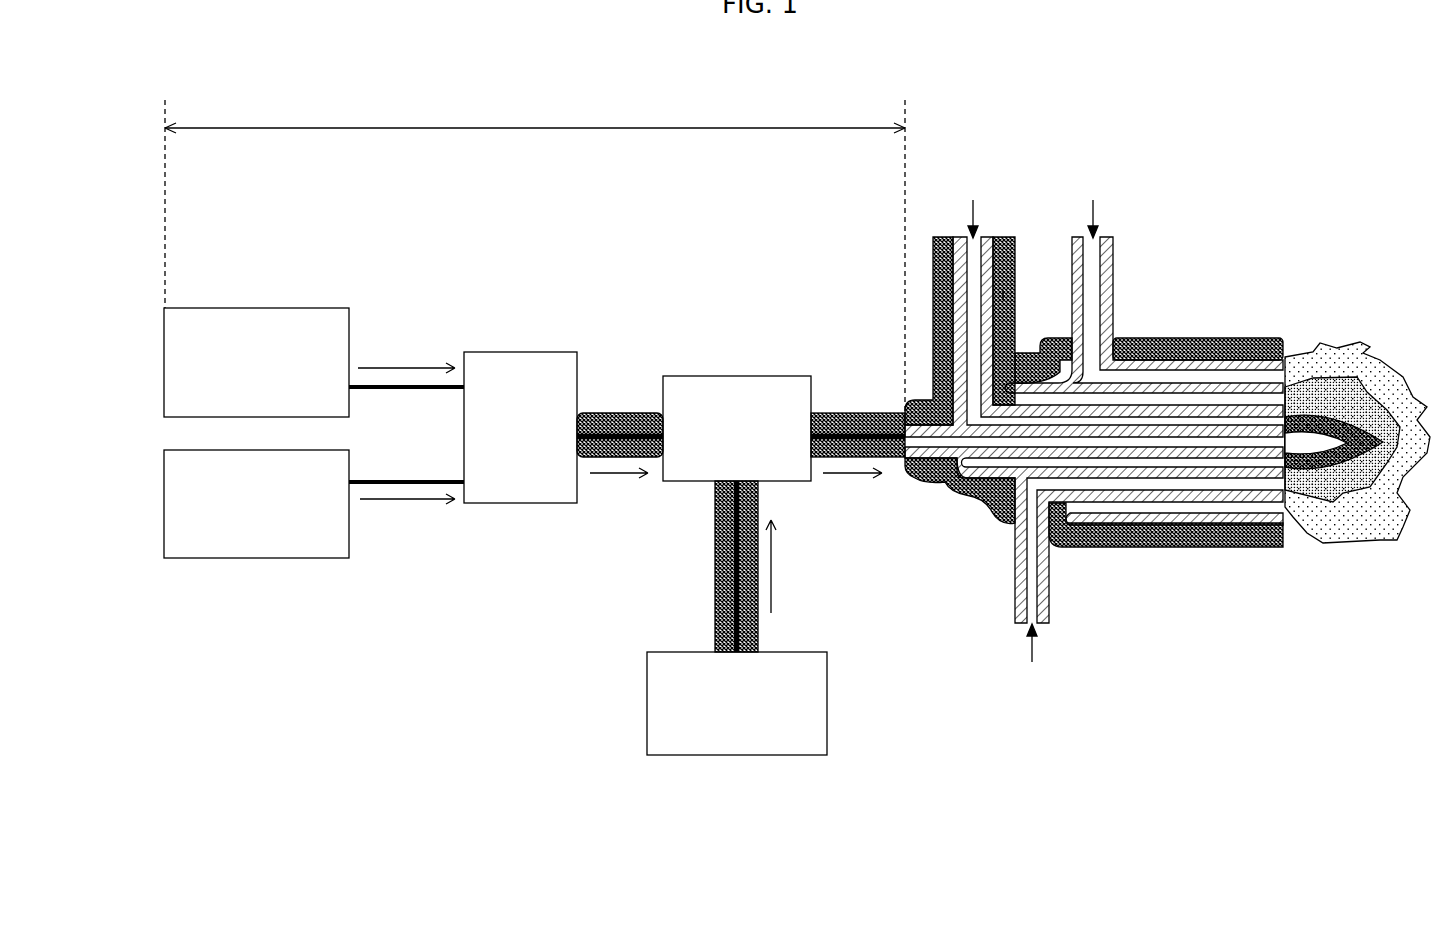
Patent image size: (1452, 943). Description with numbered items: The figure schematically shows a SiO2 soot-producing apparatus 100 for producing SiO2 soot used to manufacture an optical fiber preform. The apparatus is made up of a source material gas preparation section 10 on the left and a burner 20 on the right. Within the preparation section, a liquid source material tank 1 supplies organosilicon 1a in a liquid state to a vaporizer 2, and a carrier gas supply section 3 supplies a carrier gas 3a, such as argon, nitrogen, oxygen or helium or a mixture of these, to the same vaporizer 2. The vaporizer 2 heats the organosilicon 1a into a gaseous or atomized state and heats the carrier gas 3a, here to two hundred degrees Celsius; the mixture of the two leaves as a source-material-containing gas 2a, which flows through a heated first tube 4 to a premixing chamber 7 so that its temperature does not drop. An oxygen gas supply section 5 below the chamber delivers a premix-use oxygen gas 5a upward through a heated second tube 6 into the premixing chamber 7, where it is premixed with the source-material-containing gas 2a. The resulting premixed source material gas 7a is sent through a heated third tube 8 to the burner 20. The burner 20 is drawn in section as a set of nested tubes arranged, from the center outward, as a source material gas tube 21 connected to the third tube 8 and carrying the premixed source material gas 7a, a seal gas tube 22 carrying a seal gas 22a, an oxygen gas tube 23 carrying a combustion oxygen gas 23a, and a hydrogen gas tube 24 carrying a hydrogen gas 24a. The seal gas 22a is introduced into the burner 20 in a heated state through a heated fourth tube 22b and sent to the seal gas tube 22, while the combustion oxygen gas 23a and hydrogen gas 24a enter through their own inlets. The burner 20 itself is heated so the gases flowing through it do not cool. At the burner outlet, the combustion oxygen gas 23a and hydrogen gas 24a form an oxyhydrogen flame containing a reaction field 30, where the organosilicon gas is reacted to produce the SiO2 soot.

The SiO2 soot-producing apparatus 100 is at (927, 78).
The source material gas preparation section 10 is at (535, 204).
The liquid source material tank 1 is at (318, 308).
The organosilicon 1a is at (408, 365).
The carrier gas supply section 3 is at (318, 450).
The carrier gas 3a is at (408, 503).
The vaporizer 2 is at (547, 352).
The first tube 4 is at (620, 412).
The source-material-containing gas 2a is at (620, 477).
The premixing chamber 7 is at (783, 375).
The third tube 8 is at (852, 412).
The premixed source material gas 7a is at (852, 477).
The second tube 6 is at (715, 567).
The premix-use oxygen gas 5a is at (773, 565).
The oxygen gas supply section 5 is at (800, 652).
The burner 20 is at (1234, 277).
The source material gas tube 21 is at (1215, 430).
The seal gas tube 22 is at (1155, 410).
The seal gas 22a is at (977, 215).
The fourth tube 22b is at (1013, 294).
The oxygen gas tube 23 is at (1122, 387).
The combustion oxygen gas 23a is at (1035, 643).
The hydrogen gas tube 24 is at (1233, 523).
The hydrogen gas 24a is at (1097, 216).
The reaction field 30 is at (1403, 398).